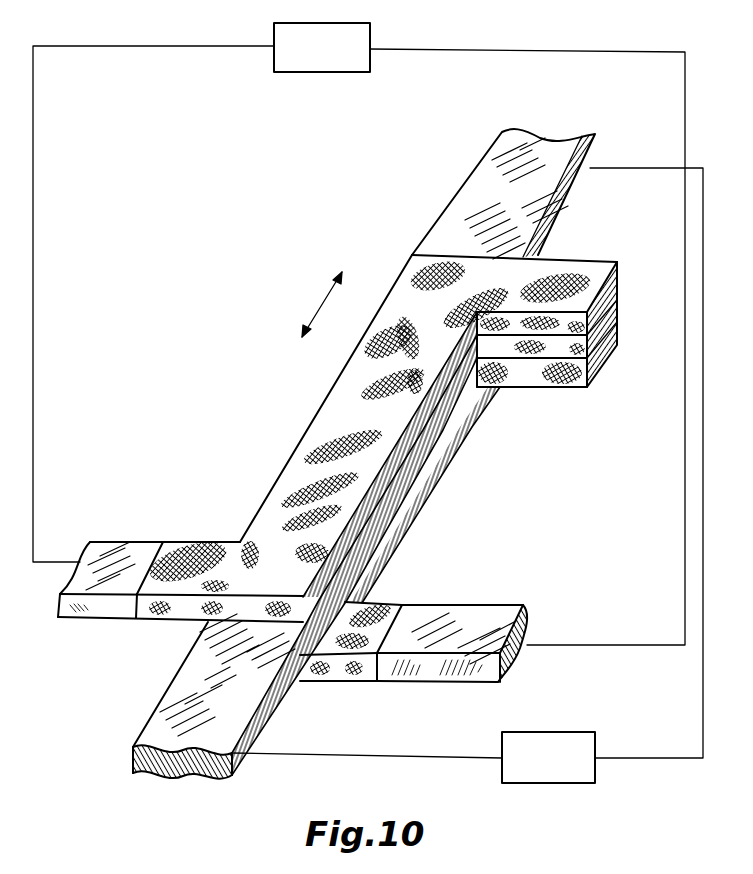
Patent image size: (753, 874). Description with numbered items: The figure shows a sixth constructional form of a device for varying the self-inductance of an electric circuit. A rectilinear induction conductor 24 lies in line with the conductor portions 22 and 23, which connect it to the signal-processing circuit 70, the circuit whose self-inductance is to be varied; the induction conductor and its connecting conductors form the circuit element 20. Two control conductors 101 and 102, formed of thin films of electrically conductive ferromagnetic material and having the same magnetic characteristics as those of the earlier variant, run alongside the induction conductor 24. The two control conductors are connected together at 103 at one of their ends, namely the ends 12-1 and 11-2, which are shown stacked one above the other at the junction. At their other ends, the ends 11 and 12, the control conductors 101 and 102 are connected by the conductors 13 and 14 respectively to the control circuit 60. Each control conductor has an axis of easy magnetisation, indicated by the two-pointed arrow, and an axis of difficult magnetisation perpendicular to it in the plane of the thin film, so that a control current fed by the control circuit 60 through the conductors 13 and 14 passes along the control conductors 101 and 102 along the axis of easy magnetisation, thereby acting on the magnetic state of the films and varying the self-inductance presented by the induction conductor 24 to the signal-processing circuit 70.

The control electric circuit 60 is at (359, 334).
The signal-processing circuit 70 is at (467, 475).
The circuit element 20 is at (282, 376).
The conductor portion 23 is at (480, 184).
The conductor portion 22 is at (177, 695).
The control conductor 101 is at (322, 428).
The control conductor 102 is at (449, 427).
The induction conductor 24 is at (367, 532).
The end of control conductor 12-1 is at (572, 268).
The connection of control conductors 103 is at (613, 322).
The end of control conductor 11-2 is at (534, 373).
The conductor (electrode) 13 is at (120, 552).
The end of control conductor 11 is at (190, 555).
The end of control conductor 12 is at (380, 617).
The conductor (electrode) 14 is at (467, 617).